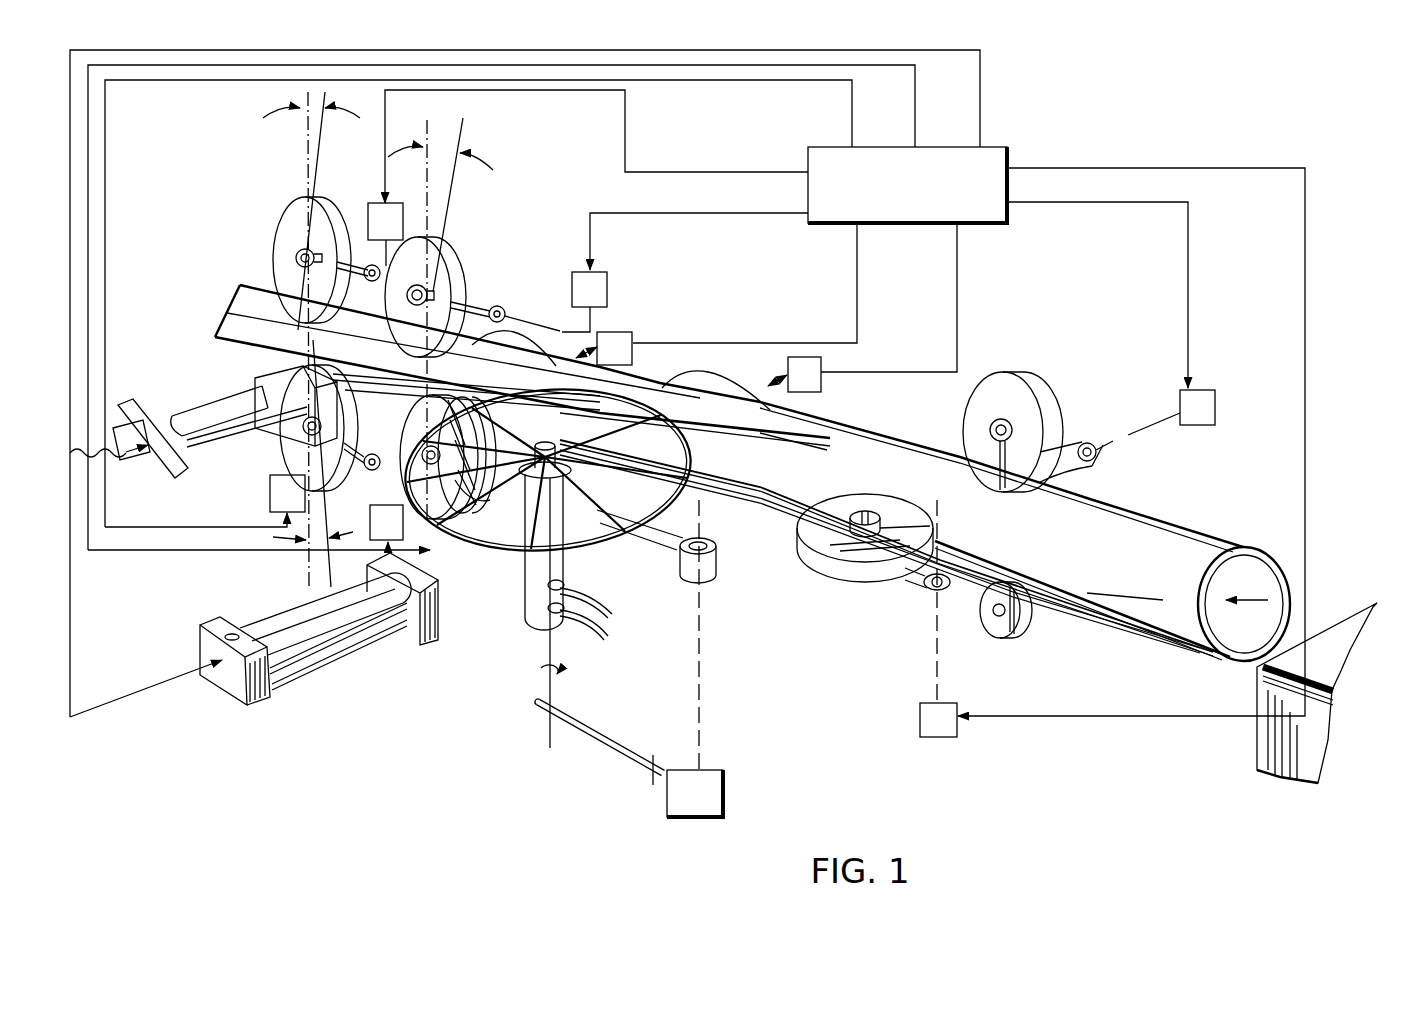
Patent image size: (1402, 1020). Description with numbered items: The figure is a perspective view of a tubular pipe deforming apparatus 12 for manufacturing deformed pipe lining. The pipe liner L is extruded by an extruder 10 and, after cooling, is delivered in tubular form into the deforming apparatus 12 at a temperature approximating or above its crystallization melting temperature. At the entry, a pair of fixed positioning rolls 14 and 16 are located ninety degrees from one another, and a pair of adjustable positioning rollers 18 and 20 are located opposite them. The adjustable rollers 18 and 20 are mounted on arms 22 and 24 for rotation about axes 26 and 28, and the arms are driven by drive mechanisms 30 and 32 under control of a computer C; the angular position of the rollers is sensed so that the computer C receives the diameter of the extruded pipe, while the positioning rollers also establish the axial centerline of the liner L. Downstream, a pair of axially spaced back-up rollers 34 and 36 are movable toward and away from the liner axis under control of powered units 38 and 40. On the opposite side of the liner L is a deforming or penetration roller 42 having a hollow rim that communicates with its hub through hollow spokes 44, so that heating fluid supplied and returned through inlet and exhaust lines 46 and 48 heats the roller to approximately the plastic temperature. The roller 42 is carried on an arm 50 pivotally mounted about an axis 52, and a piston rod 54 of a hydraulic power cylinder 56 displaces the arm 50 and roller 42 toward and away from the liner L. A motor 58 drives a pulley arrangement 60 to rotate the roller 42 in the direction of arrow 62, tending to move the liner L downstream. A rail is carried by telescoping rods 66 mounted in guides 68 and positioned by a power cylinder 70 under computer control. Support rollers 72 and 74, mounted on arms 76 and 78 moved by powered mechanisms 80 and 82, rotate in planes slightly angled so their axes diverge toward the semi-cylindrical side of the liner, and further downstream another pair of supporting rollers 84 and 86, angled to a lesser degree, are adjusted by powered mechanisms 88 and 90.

The extruder 10 is at (1257, 752).
The deforming apparatus 12 is at (781, 633).
The fixed positioning roll 14 is at (1036, 622).
The fixed positioning roll 16 is at (1102, 483).
The adjustable positioning roller 18 is at (964, 420).
The adjustable positioning roller 20 is at (838, 573).
The arm 22 is at (1089, 440).
The arm 24 is at (920, 579).
The axis 26 is at (1138, 433).
The axis 28 is at (937, 660).
The drive mechanism 30 is at (1215, 413).
The drive mechanism 32 is at (957, 737).
The back-up roller 34 is at (712, 381).
The back-up roller 36 is at (527, 337).
The powered unit 38 is at (822, 362).
The powered unit 40 is at (630, 332).
The deforming roller 42 is at (592, 545).
The hollow spokes 44 is at (637, 488).
The fluid inlet line 46 is at (618, 612).
The fluid exhaust line 48 is at (596, 630).
The arm 50 is at (628, 555).
The axis 52 is at (704, 690).
The piston rod 54 is at (466, 556).
The power cylinder 56 is at (260, 627).
The motor 58 is at (725, 768).
The pulley arrangement 60 is at (602, 745).
The arrow 62 is at (560, 678).
The telescoping rods 66 is at (365, 402).
The guides 68 is at (266, 374).
The power cylinder 70 is at (142, 462).
The support roller 72 is at (465, 260).
The support roller 74 is at (471, 491).
The arm 76 is at (498, 306).
The arm 78 is at (485, 410).
The powered mechanism 80 is at (607, 272).
The powered mechanism 82 is at (372, 520).
The supporting roller 84 is at (278, 238).
The supporting roller 86 is at (283, 445).
The powered mechanism 88 is at (372, 205).
The powered mechanism 90 is at (270, 493).
The computer C is at (993, 226).
The pipe liner L is at (1100, 617).